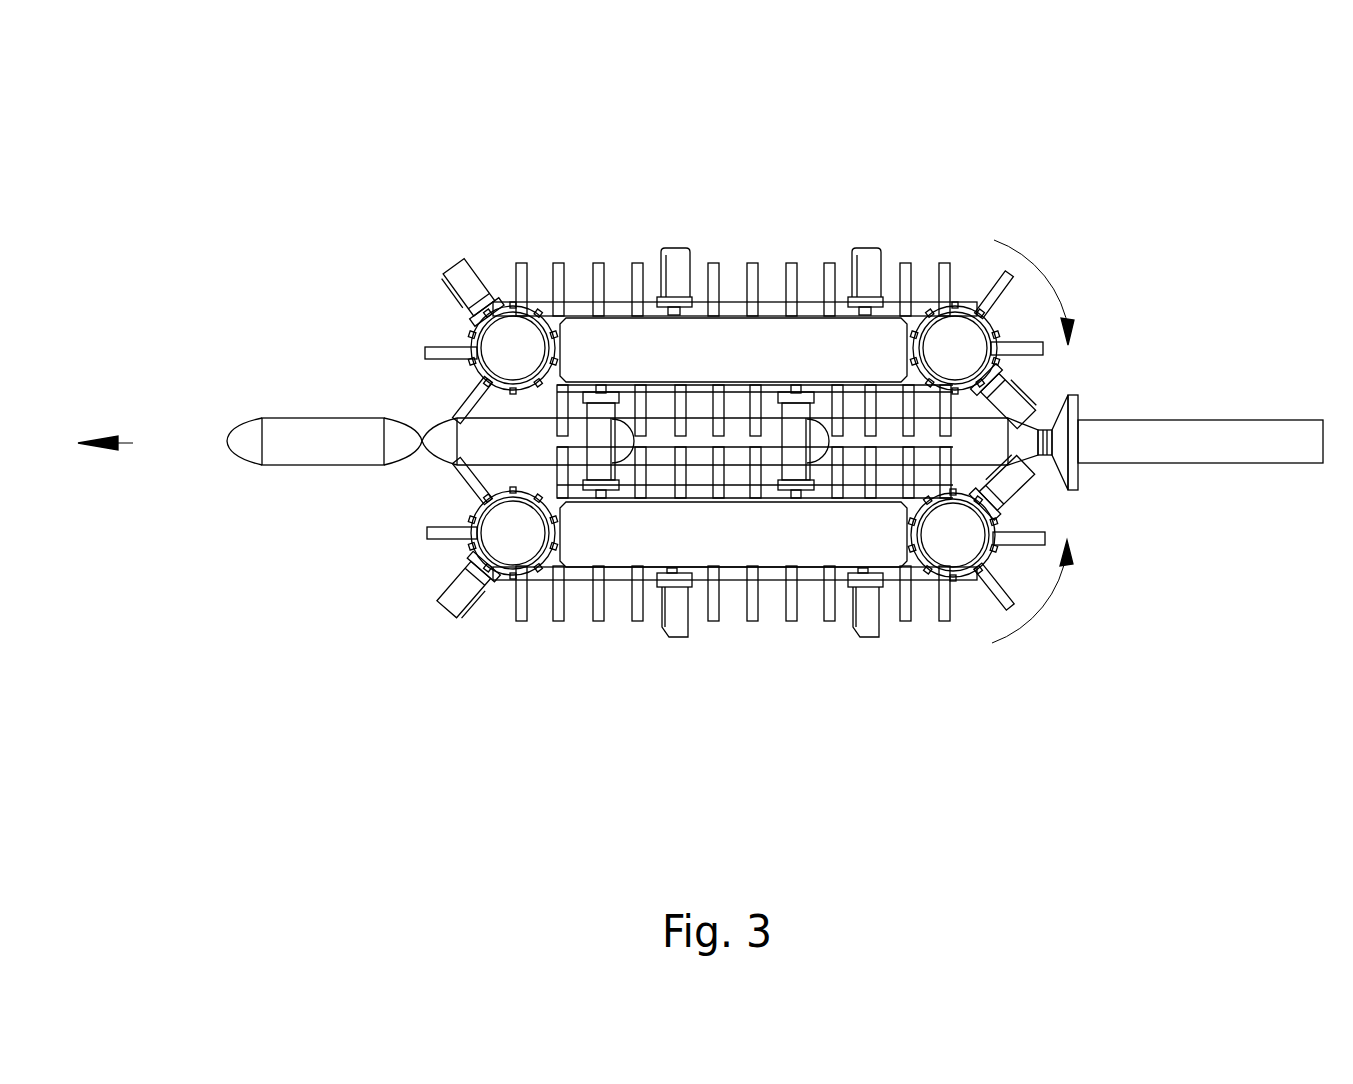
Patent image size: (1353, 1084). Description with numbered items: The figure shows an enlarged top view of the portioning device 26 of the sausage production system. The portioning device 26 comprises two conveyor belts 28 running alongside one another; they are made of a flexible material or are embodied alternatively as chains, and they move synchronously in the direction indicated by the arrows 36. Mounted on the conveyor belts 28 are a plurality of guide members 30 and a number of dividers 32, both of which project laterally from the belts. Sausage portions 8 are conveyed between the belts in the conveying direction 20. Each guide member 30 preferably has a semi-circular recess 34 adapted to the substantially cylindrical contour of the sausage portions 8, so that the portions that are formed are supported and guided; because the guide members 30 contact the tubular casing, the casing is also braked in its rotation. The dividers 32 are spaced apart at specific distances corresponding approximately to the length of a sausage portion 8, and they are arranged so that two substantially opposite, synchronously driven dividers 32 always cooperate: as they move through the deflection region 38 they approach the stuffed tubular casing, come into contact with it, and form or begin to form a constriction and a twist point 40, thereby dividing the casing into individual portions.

The portioning device 26 is at (148, 133).
The conveyor belt 28 is at (428, 250).
The guide member 30 is at (790, 272).
The divider 32 is at (672, 272).
The semi-circular recess 34 is at (665, 250).
The arrow 36 is at (1048, 272).
The deflection region 38 is at (1055, 382).
The twist point 40 is at (422, 441).
The sausage portion 8 is at (247, 443).
The conveying direction 20 is at (133, 443).